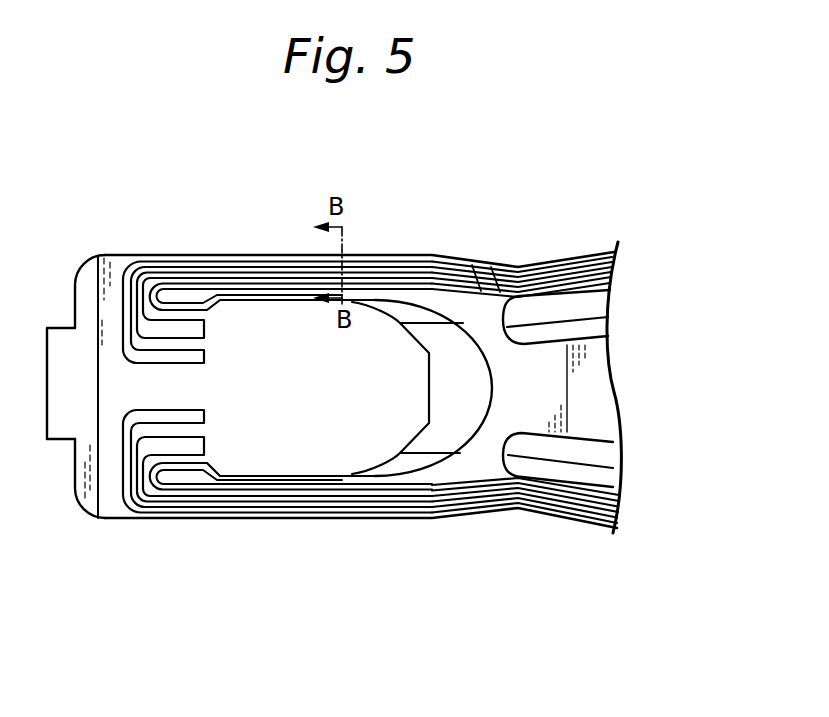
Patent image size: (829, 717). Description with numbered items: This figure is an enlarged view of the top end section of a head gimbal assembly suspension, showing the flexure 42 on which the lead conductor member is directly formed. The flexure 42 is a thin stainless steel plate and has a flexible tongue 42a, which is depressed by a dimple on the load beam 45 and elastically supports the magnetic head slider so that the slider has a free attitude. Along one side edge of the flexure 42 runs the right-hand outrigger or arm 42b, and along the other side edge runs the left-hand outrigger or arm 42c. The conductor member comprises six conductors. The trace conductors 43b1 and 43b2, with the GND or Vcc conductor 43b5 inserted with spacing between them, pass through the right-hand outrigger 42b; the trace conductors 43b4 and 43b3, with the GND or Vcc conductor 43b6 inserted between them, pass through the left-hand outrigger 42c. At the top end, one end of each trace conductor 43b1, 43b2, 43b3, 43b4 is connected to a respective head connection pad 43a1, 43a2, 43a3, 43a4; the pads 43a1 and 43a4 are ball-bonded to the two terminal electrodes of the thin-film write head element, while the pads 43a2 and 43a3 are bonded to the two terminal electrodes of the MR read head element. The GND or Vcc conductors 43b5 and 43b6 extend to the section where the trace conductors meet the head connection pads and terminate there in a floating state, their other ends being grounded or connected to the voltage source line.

The flexure 42 is at (598, 413).
The flexible tongue 42a is at (374, 325).
The outrigger or arm 42b is at (213, 256).
The outrigger or arm 42c is at (212, 522).
The head connection pad 43a1 is at (199, 355).
The head connection pad 43a2 is at (199, 326).
The head connection pad 43a3 is at (199, 447).
The head connection pad 43a4 is at (199, 417).
The trace conductor 43b1 is at (454, 264).
The trace conductor 43b2 is at (510, 268).
The trace conductor 43b3 is at (440, 513).
The trace conductor 43b4 is at (492, 506).
The GND conductor or Vcc conductor 43b5 is at (485, 266).
The GND conductor or Vcc conductor 43b6 is at (477, 513).
The load beam 45 is at (597, 323).